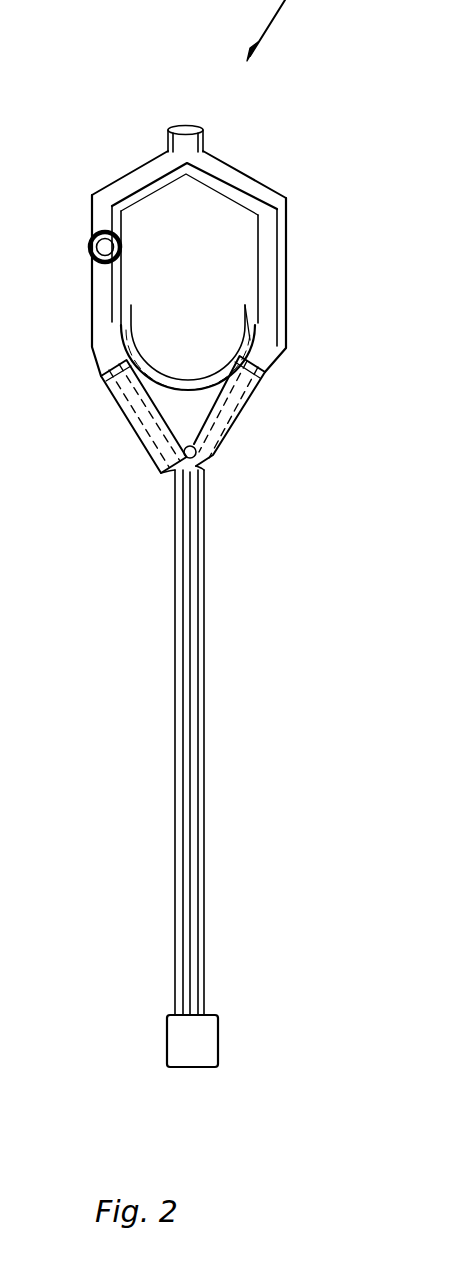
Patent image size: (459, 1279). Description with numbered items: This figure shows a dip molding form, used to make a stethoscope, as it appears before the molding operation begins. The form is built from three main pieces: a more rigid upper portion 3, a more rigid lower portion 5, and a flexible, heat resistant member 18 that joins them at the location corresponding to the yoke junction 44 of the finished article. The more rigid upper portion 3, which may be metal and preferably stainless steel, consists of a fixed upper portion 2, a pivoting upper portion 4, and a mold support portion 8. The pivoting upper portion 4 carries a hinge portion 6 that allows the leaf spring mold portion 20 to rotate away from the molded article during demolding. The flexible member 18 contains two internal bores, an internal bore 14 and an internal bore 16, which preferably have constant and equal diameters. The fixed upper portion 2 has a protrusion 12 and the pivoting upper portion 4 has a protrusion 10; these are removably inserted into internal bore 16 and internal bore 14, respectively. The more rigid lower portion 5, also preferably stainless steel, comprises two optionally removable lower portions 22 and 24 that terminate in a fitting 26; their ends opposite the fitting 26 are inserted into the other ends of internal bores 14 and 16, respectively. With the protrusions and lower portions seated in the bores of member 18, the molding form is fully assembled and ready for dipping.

The fixed upper portion 2 is at (290, 287).
The more rigid upper portion 3 is at (243, 171).
The pivoting upper portion 4 is at (88, 292).
The more rigid lower portion 5 is at (191, 742).
The hinge portion 6 is at (88, 248).
The mold support portion 8 is at (167, 140).
The protrusion 10 is at (110, 384).
The protrusion 12 is at (262, 374).
The internal bore 14 is at (137, 412).
The internal bore 16 is at (245, 410).
The flexible, heat resistant member 18 is at (152, 462).
The leaf spring mold portion 20 is at (183, 368).
The lower portion 22 is at (176, 737).
The lower portion 24 is at (201, 683).
The fitting 26 is at (167, 1043).
The yoke junction 44 is at (200, 456).